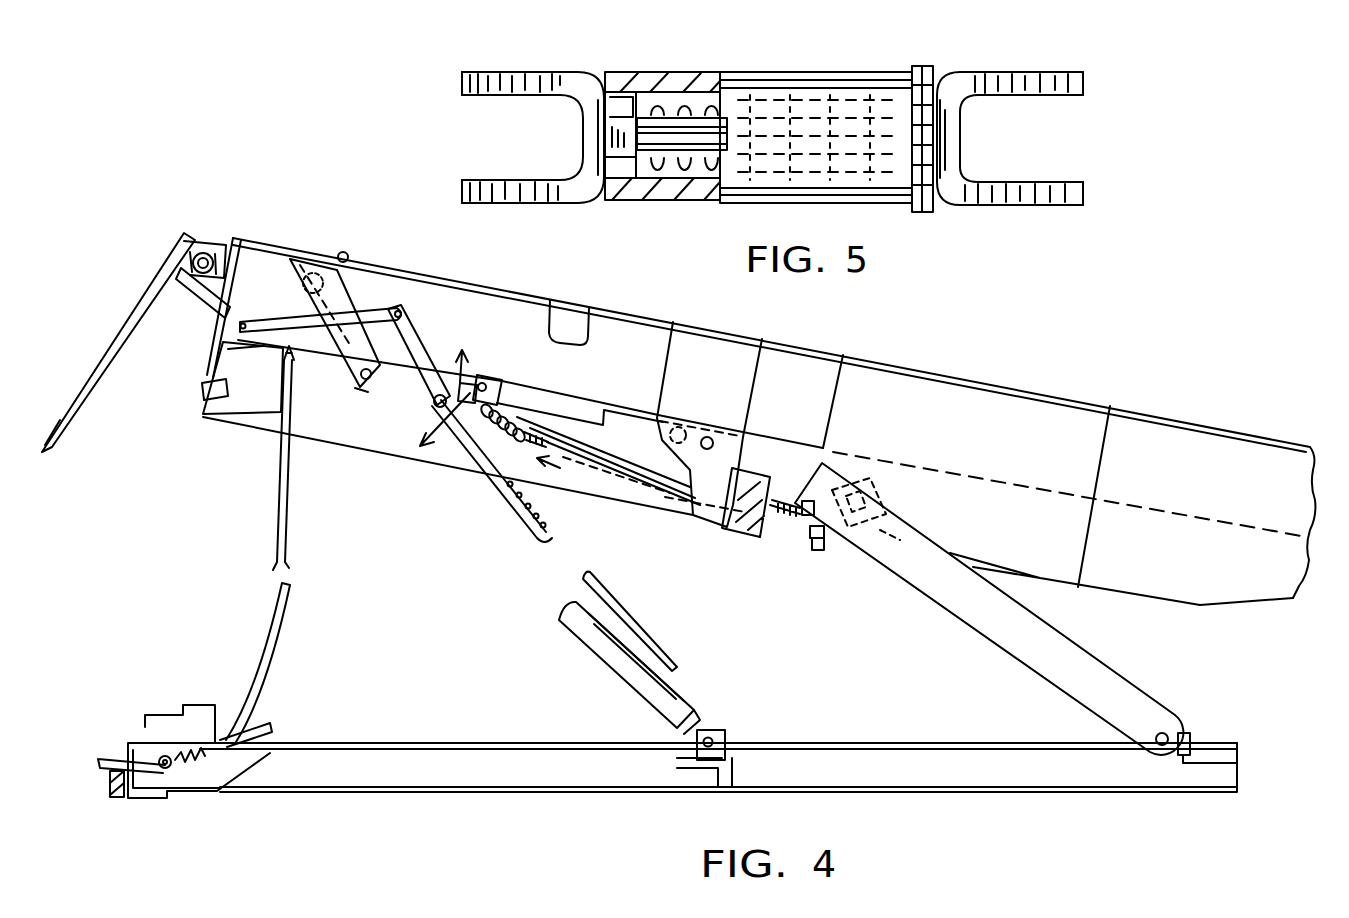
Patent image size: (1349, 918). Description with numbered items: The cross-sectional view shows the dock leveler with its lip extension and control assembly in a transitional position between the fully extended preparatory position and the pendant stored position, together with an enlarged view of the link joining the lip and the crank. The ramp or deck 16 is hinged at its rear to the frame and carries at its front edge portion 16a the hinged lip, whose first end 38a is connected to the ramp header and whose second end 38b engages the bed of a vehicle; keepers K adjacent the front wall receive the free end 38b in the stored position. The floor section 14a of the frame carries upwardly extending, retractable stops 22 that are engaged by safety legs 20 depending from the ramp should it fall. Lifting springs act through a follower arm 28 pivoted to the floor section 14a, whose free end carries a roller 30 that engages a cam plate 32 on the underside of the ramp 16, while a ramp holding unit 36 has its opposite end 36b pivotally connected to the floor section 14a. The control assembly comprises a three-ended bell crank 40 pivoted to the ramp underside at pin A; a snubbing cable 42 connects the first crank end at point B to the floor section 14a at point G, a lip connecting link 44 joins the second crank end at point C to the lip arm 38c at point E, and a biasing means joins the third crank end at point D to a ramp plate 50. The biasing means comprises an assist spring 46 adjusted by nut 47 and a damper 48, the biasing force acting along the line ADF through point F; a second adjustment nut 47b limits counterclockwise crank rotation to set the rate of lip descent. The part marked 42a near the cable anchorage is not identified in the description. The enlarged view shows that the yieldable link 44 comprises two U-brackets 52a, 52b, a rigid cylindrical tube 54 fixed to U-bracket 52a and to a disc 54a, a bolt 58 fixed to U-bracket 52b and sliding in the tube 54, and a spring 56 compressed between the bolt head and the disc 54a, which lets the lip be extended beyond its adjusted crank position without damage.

In FIG. 5, the U-bracket 52a is at (486, 73).
In FIG. 5, the bolt 58 is at (624, 101).
In FIG. 5, the spring 56 is at (698, 101).
In FIG. 5, the rigid cylindrical tube 54 is at (760, 73).
In FIG. 5, the disc 54a is at (923, 68).
In FIG. 5, the U-bracket 52b is at (1077, 71).
In FIG. 4, the ramp 16 is at (993, 389).
In FIG. 4, the front edge portion 16a is at (212, 349).
In FIG. 4, the cam plate 32 is at (1060, 560).
In FIG. 4, the roller 30 is at (870, 487).
In FIG. 4, the ramp plate 50 is at (720, 367).
In FIG. 4, the damper 48 is at (582, 412).
In FIG. 4, the adjustment nut 47 is at (470, 408).
In FIG. 4, the adjustment nut 47b is at (824, 547).
In FIG. 4, the assist spring 46 is at (508, 470).
In FIG. 4, the follower arm 28 is at (1133, 686).
In FIG. 4, the floor section 14a is at (900, 744).
In FIG. 4, the ramp holding unit 36 is at (610, 650).
In FIG. 4, the opposite end of holding unit 36b is at (693, 740).
In FIG. 4, the first end of lip 38a is at (180, 238).
In FIG. 4, the second end of lip 38b is at (46, 438).
In FIG. 4, the lip arm 38c is at (193, 292).
In FIG. 4, the safety legs 20 is at (248, 422).
In FIG. 4, the lip connecting link 44 is at (293, 268).
In FIG. 4, the bell crank 40 is at (424, 326).
In FIG. 4, the snubbing cable 42 is at (277, 603).
In FIG. 4, the cable housing 42a is at (190, 742).
In FIG. 4, the stops 22 is at (168, 717).
In FIG. 4, the pin A is at (362, 395).
In FIG. 4, the point B is at (289, 351).
In FIG. 4, the point C is at (422, 338).
In FIG. 4, the point D is at (428, 405).
In FIG. 4, the point E is at (283, 328).
In FIG. 4, the point F is at (745, 540).
In FIG. 4, the point G is at (100, 776).
In FIG. 4, the keepers K is at (110, 796).